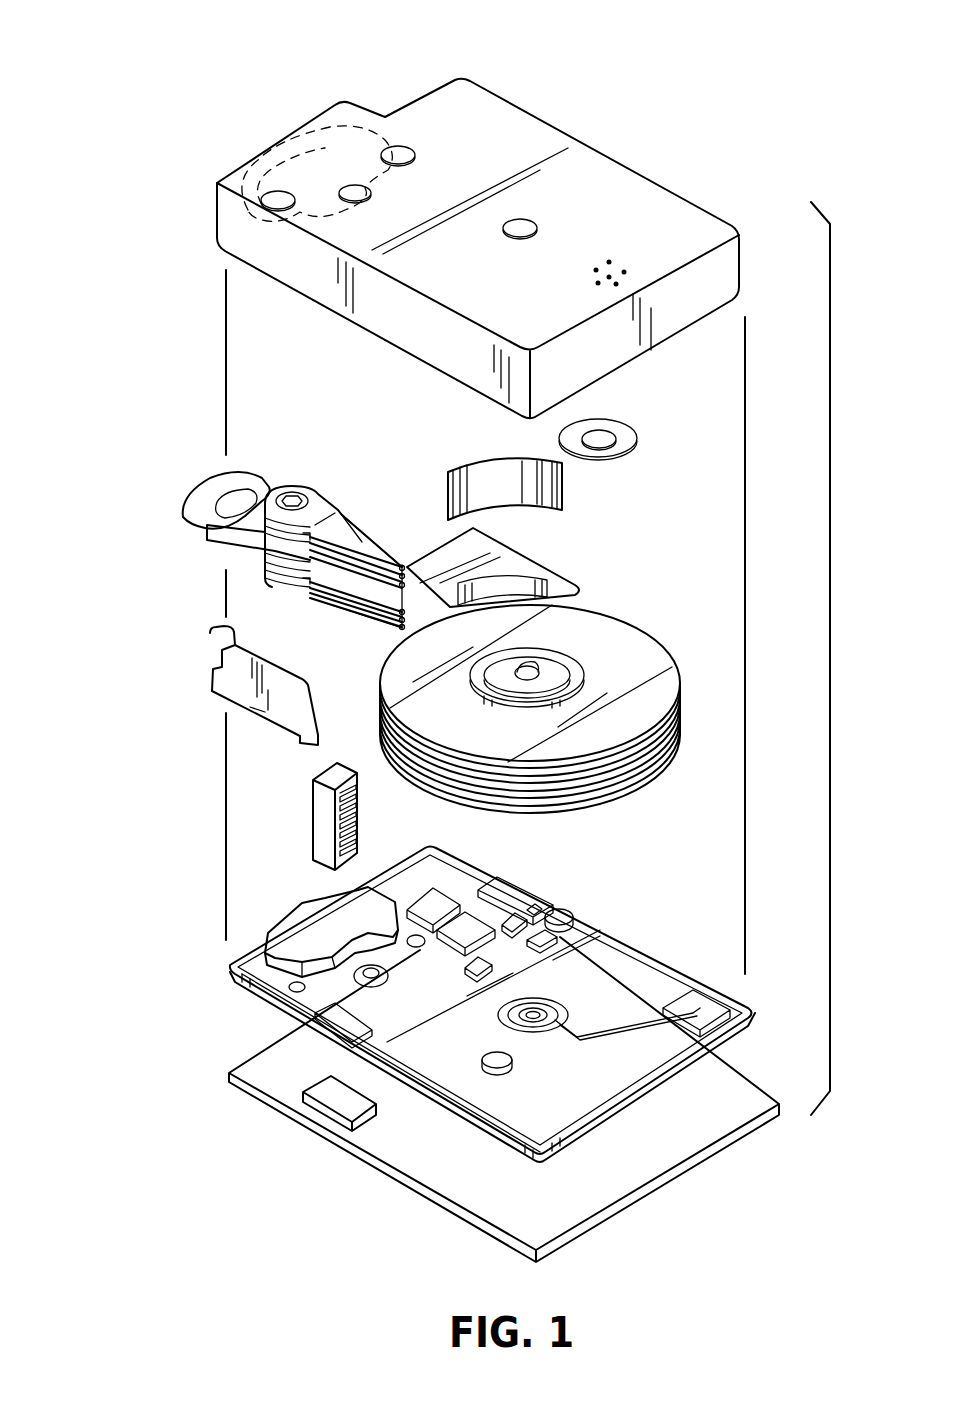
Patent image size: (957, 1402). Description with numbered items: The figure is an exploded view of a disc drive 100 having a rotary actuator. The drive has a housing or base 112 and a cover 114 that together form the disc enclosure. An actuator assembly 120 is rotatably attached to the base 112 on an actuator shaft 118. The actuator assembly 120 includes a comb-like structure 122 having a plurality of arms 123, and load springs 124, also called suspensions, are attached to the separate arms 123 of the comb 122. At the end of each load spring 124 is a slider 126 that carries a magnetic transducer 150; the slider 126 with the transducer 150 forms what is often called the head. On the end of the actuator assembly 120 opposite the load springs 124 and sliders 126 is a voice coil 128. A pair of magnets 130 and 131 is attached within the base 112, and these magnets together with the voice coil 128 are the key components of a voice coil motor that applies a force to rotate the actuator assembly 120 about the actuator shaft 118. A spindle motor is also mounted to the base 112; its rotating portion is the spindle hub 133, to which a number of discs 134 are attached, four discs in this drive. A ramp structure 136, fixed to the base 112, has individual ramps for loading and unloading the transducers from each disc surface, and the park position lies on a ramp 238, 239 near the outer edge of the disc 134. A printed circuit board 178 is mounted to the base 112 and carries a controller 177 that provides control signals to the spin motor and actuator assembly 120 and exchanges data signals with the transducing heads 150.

The disc drive 100 is at (614, 95).
The base 112 is at (650, 970).
The cover 114 is at (627, 188).
The actuator shaft 118 is at (295, 493).
The actuator assembly 120 is at (243, 543).
The comb-like structure 122 is at (313, 597).
The arms 123 is at (357, 540).
The load springs 124 is at (361, 527).
The slider 126 is at (402, 567).
The voice coil 128 is at (207, 500).
The magnet 130 is at (287, 933).
The magnet 131 is at (318, 132).
The spindle hub 133 is at (537, 667).
The discs 134 is at (647, 653).
The ramp structure 136 is at (320, 817).
The magnetic transducer 150 is at (402, 572).
The controller 177 is at (336, 1097).
The printed circuit board 178 is at (251, 1099).
The ramp 238 is at (353, 772).
The ramp 239 is at (357, 792).